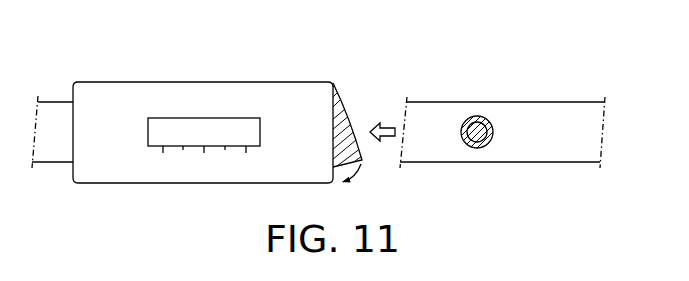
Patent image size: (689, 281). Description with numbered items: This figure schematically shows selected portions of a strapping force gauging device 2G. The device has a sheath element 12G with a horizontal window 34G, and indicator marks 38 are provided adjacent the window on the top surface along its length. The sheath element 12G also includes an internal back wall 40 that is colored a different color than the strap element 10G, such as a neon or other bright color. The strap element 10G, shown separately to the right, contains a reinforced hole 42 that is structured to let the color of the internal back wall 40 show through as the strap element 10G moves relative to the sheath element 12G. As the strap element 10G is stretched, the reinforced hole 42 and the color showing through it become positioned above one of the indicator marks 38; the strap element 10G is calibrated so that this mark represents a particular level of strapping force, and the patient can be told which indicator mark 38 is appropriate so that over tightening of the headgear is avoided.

The strapping force gauging device 2G is at (359, 68).
The sheath element 12G is at (112, 92).
The horizontal window 34G is at (148, 131).
The indicator marks 38 is at (258, 187).
The internal back wall 40 is at (348, 125).
The strap element 10G is at (562, 110).
The reinforced hole 42 is at (493, 132).